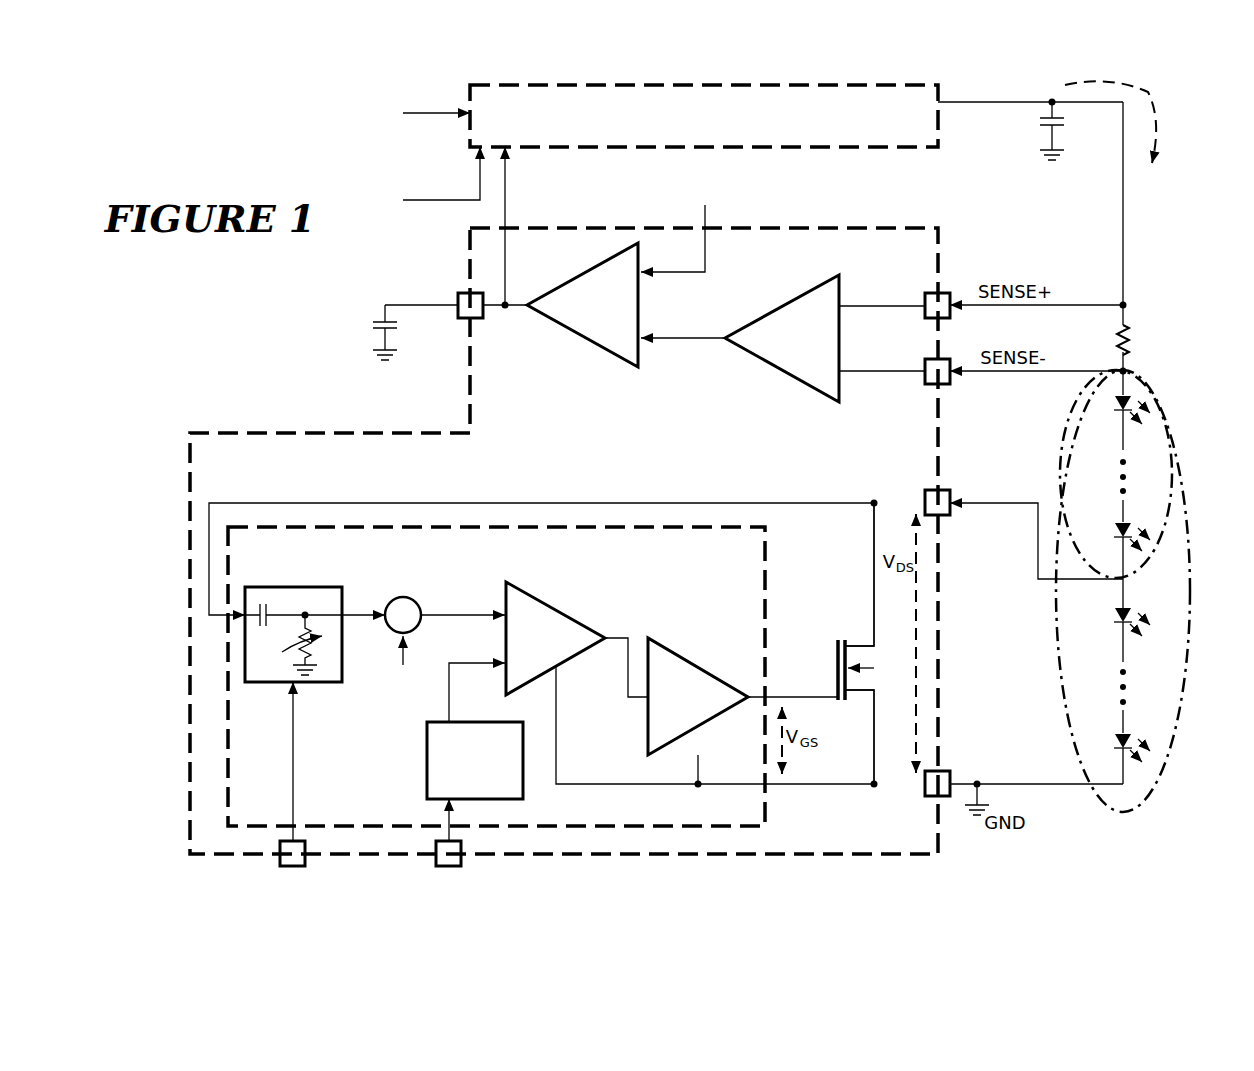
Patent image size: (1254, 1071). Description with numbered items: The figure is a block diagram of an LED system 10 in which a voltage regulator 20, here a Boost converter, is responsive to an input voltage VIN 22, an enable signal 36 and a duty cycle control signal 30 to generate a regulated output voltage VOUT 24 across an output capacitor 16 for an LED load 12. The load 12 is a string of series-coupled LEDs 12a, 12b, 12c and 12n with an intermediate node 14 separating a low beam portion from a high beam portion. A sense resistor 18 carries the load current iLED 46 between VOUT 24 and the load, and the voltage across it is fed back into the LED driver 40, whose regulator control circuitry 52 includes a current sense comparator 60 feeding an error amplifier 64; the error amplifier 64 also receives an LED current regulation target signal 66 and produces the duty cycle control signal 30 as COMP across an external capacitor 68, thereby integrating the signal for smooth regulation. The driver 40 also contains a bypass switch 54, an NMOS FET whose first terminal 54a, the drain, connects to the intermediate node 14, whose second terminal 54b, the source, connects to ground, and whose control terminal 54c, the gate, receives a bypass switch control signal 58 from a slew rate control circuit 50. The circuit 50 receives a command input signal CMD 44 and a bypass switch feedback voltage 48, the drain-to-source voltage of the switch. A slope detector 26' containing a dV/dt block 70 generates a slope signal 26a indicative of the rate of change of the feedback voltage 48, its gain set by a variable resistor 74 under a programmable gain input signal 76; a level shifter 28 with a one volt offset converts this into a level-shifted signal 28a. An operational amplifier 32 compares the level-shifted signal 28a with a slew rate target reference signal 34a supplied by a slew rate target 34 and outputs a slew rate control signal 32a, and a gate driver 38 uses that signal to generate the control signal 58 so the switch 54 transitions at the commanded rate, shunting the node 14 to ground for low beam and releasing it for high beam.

The LED system 10 is at (355, 115).
The LED load 12 is at (1192, 398).
The LED 12a is at (1116, 402).
The LED 12b is at (1116, 535).
The LED 12c is at (1116, 618).
The LED 12n is at (1116, 747).
The intermediate node 14 is at (1114, 582).
The output capacitor 16 is at (1062, 127).
The sense resistor 18 is at (1118, 334).
The voltage regulator 20 is at (704, 116).
The input voltage VIN 22 is at (425, 118).
The regulated output voltage VOUT 24 is at (1050, 104).
The slope signal 26a is at (355, 613).
The slope detector 26' is at (330, 761).
The level shifter 28 is at (386, 628).
The level-shifted signal 28a is at (490, 613).
The duty cycle control signal 30 is at (505, 208).
The operational amplifier 32 is at (548, 602).
The slew rate control signal 32a is at (635, 700).
The slew rate target 34 is at (475, 760).
The slew rate target reference signal 34a is at (478, 661).
The enable signal 36 is at (425, 205).
The gate driver 38 is at (714, 677).
The LED driver 40 is at (190, 473).
The command input signal CMD 44 is at (456, 848).
The load current iLED 46 is at (1166, 110).
The bypass switch feedback voltage 48 is at (403, 503).
The slew rate control circuit 50 is at (496, 676).
The regulator control circuitry 52 is at (704, 331).
The bypass switch 54 is at (870, 657).
The first terminal 54a is at (872, 633).
The second terminal 54b is at (868, 697).
The control terminal 54c is at (835, 681).
The bypass switch control signal 58 is at (795, 696).
The current sense comparator 60 is at (763, 318).
The error amplifier 64 is at (605, 352).
The LED current regulation target signal 66 is at (705, 243).
The capacitor 68 is at (398, 326).
The dV/dt circuit 70 is at (265, 601).
The variable resistor 74 is at (291, 645).
The programmable gain input signal 76 is at (300, 848).